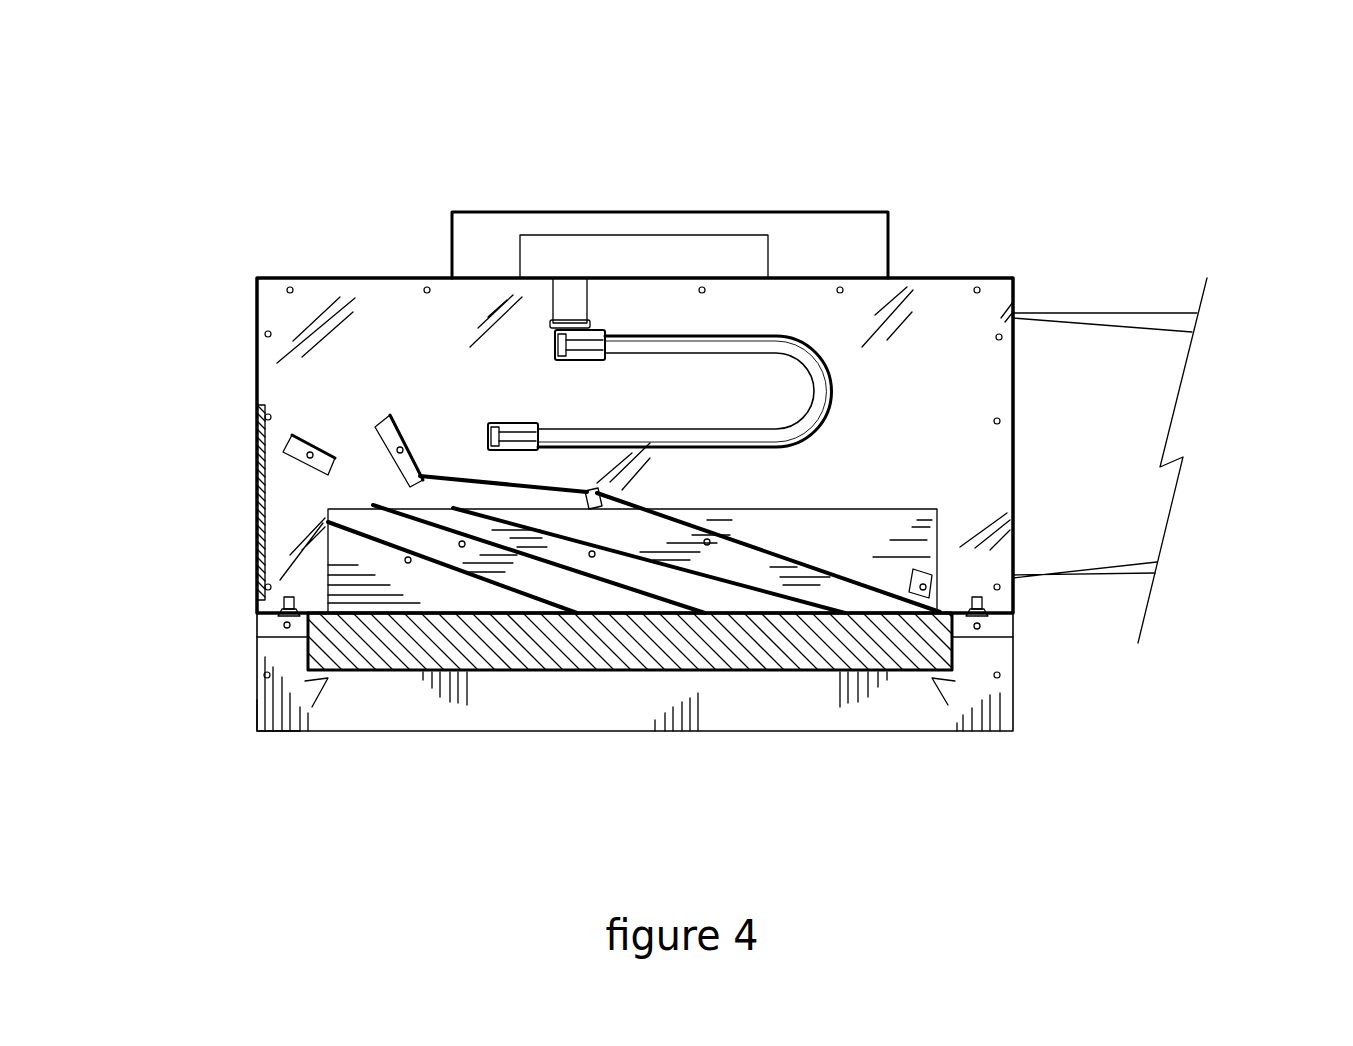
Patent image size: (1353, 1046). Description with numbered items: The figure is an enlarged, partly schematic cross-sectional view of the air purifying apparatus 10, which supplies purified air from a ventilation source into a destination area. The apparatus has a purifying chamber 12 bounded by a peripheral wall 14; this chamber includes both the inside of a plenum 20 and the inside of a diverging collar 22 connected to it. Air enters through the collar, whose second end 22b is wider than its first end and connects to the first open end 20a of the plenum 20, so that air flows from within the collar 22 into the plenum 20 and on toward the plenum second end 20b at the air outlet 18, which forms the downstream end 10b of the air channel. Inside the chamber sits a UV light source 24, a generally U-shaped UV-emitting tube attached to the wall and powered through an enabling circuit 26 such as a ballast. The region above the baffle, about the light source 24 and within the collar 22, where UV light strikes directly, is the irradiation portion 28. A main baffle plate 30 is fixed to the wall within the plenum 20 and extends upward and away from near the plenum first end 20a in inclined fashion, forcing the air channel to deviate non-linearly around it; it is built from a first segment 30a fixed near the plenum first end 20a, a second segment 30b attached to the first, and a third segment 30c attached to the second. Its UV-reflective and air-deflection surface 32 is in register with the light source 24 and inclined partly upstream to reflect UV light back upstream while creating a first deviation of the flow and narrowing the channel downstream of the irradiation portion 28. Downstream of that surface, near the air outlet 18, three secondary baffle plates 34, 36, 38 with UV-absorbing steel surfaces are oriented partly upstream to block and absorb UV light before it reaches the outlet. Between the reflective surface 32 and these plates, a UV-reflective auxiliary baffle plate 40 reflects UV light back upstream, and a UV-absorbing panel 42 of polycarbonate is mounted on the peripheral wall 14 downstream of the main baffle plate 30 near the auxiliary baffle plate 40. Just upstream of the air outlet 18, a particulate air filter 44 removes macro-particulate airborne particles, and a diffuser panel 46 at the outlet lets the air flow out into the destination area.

The air purifying apparatus 10 is at (905, 770).
The downstream end 10b is at (425, 732).
The purifying chamber 12 is at (877, 360).
The peripheral wall 14 is at (322, 272).
The air outlet 18 is at (990, 732).
The plenum 20 is at (257, 297).
The plenum first open end 20a is at (1013, 290).
The plenum second end 20b is at (307, 737).
The diverging collar 22 is at (1105, 577).
The collar second end 22b is at (1015, 538).
The UV light source 24 is at (797, 348).
The enabling circuit 26 is at (613, 257).
The irradiation portion 28 is at (932, 337).
The main baffle plate 30 is at (822, 555).
The first segment 30a is at (783, 550).
The second segment 30b is at (460, 477).
The third segment 30c is at (407, 430).
The UV-reflective and air-deflection surface 32 is at (640, 495).
The secondary baffle plate 34 is at (465, 577).
The secondary baffle plate 36 is at (593, 590).
The secondary baffle plate 38 is at (747, 590).
The auxiliary baffle plate 40 is at (307, 438).
The UV-absorbing panel 42 is at (265, 540).
The particulate air filter 44 is at (370, 643).
The diffuser panel 46 is at (367, 732).